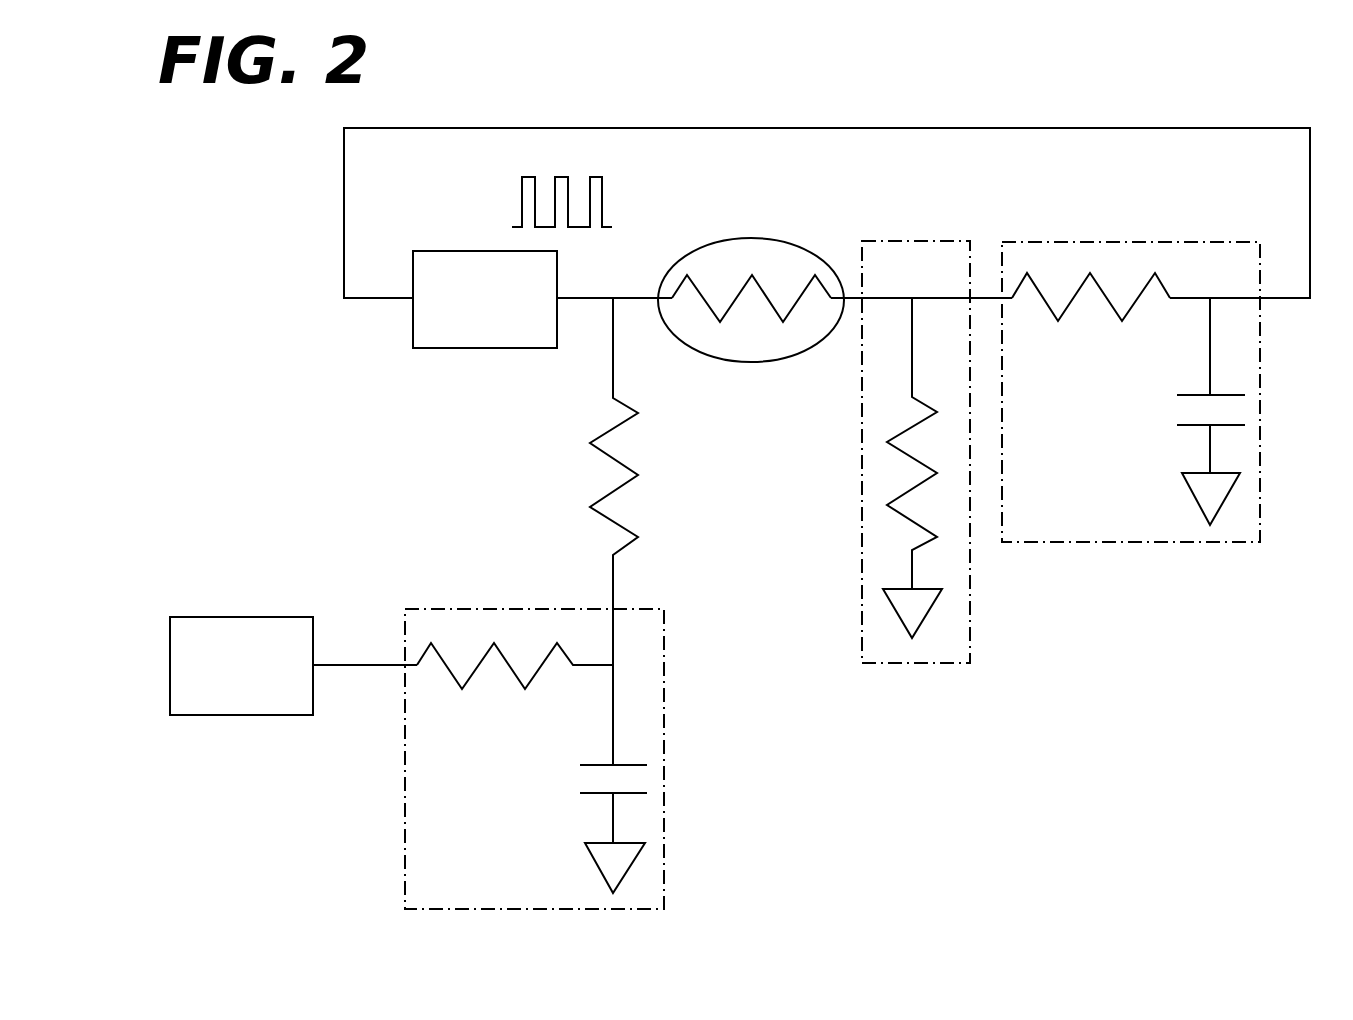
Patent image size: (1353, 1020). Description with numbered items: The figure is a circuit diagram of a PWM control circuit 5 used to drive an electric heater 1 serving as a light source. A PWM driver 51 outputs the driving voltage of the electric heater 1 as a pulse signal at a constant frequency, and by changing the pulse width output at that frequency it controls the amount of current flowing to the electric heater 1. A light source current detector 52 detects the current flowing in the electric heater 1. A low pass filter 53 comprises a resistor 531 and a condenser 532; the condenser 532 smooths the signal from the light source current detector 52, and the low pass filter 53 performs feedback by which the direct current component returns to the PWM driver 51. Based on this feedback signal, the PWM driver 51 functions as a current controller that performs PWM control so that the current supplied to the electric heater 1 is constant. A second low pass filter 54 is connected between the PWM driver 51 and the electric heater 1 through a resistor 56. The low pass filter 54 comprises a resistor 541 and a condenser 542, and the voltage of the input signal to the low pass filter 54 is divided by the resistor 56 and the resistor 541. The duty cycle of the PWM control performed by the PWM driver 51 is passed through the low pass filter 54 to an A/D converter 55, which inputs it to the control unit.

The electric heater 1 is at (714, 238).
The PWM control circuit 5 is at (1081, 712).
The PWM driver 51 is at (443, 349).
The light source current detector 52 is at (902, 664).
The low pass filter 53 is at (1131, 444).
The resistor 531 is at (1115, 310).
The condenser 532 is at (1187, 427).
The low pass filter 54 is at (551, 759).
The resistor 541 is at (516, 678).
The condenser 542 is at (589, 795).
The A/D converter 55 is at (238, 617).
The resistor 56 is at (597, 447).